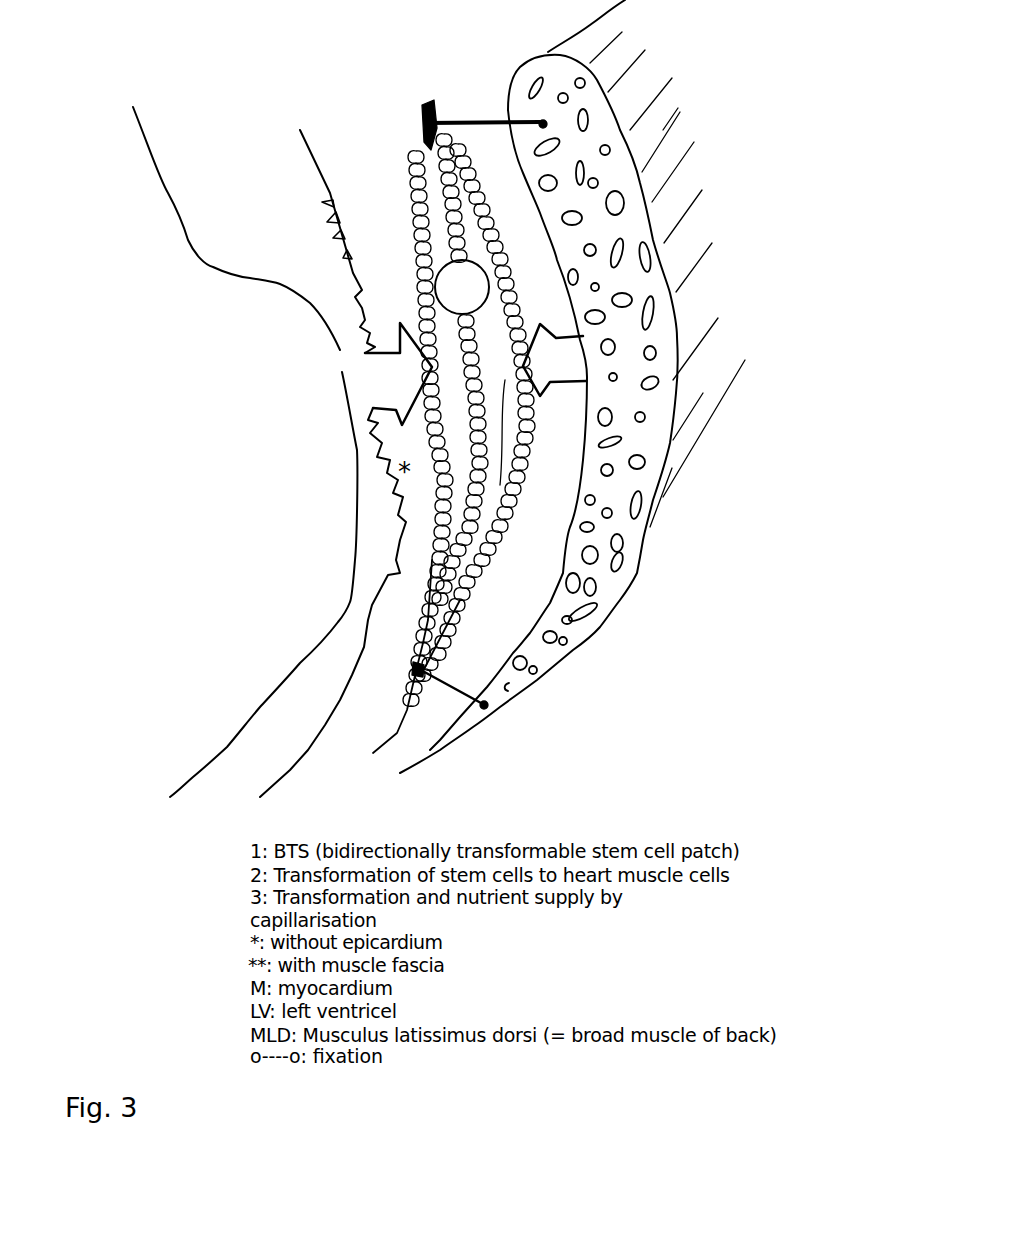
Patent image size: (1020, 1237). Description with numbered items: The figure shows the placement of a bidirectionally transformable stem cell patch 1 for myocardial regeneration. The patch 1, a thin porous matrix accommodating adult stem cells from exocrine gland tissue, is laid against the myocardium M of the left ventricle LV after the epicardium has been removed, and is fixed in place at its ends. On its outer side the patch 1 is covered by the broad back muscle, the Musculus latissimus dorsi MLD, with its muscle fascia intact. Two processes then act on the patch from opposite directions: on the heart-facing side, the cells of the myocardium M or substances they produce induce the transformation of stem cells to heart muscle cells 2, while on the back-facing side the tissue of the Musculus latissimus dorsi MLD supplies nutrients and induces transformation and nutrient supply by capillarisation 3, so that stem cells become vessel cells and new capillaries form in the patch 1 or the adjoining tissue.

The bidirectionally transformable stem cell patch 1 is at (460, 426).
The transformation of stem cells to heart muscle cells 2 is at (398, 374).
The transformation and nutrient supply by capillarisation 3 is at (554, 360).
The myocardium M is at (317, 463).
The left ventricle LV is at (245, 452).
The Musculus latissimus dorsi MLD is at (585, 386).